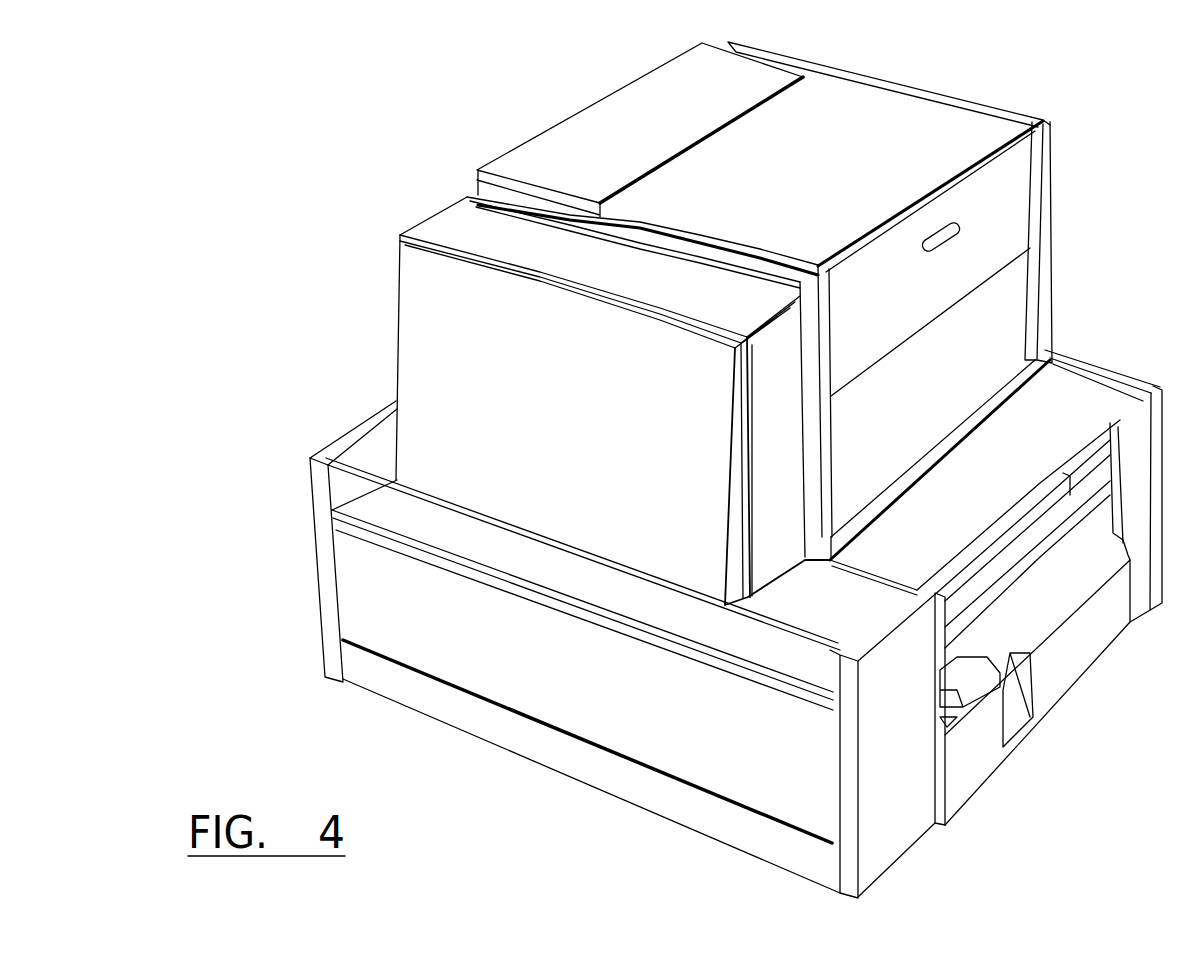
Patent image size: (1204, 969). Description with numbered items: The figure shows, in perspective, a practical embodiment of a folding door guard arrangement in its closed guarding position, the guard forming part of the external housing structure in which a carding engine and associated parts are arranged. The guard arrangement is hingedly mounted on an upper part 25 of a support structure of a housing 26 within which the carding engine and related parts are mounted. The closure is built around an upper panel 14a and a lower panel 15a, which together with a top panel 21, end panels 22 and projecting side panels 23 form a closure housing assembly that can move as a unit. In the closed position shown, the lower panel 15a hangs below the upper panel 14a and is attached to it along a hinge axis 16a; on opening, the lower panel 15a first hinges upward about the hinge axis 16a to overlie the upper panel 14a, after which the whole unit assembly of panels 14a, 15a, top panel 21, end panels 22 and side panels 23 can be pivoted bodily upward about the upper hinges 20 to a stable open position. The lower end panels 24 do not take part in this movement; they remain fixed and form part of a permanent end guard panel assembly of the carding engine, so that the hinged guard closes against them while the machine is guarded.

The upper panel 14a is at (575, 436).
The lower panel 15a is at (595, 704).
The hinge axis 16a is at (400, 543).
The upper hinges 20 is at (468, 198).
The top panel 21 is at (570, 255).
The end panels 22 is at (787, 478).
The projecting side panels 23 is at (835, 626).
The lower end panels 24 is at (905, 742).
The upper part 25 is at (528, 202).
The housing 26 is at (848, 154).